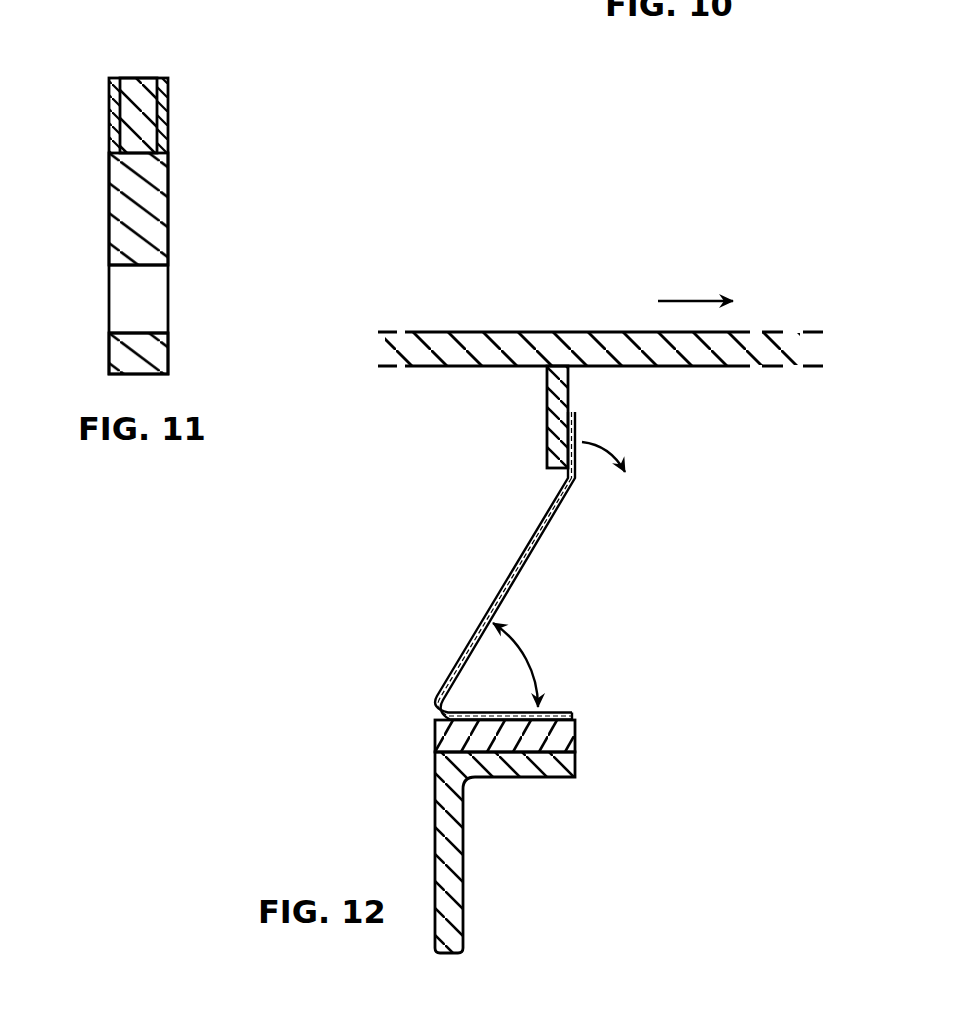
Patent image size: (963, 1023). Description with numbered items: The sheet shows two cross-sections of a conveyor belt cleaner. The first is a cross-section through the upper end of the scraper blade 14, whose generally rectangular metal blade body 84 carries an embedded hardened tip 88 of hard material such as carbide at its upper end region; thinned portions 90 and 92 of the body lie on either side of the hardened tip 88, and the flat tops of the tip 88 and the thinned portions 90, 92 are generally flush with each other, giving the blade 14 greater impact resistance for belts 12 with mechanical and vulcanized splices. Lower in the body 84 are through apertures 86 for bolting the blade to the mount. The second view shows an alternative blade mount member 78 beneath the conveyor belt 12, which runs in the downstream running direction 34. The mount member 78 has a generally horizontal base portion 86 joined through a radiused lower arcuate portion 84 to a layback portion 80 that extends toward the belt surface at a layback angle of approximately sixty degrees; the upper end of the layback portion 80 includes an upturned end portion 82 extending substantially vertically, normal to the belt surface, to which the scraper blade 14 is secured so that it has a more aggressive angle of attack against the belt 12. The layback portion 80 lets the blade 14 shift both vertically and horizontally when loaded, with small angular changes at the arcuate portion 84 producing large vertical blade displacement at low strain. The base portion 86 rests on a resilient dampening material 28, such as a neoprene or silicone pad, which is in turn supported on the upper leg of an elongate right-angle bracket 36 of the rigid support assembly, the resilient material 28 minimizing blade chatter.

In FIG. 12, the conveyor belt 12 is at (457, 336).
In FIG. 11, the scraper blade 14 is at (205, 190).
In FIG. 12, the scraper blade 14 is at (547, 432).
In FIG. 12, the resilient dampening material 28 is at (572, 735).
In FIG. 12, the downstream running direction 34 is at (695, 300).
In FIG. 12, the right-angle bracket 36 is at (500, 845).
In FIG. 12, the blade mount member 78 is at (437, 658).
In FIG. 12, the layback portion 80 is at (502, 572).
In FIG. 12, the upturned end portion 82 is at (570, 430).
In FIG. 11, the lower arcuate portion 84 is at (112, 232).
In FIG. 12, the lower arcuate portion 84 is at (440, 712).
In FIG. 11, the base portion 86 is at (152, 268).
In FIG. 12, the base portion 86 is at (565, 713).
In FIG. 11, the hardened tip 88 is at (142, 82).
In FIG. 11, the thinned portion 90 is at (108, 115).
In FIG. 11, the thinned portion 92 is at (170, 115).